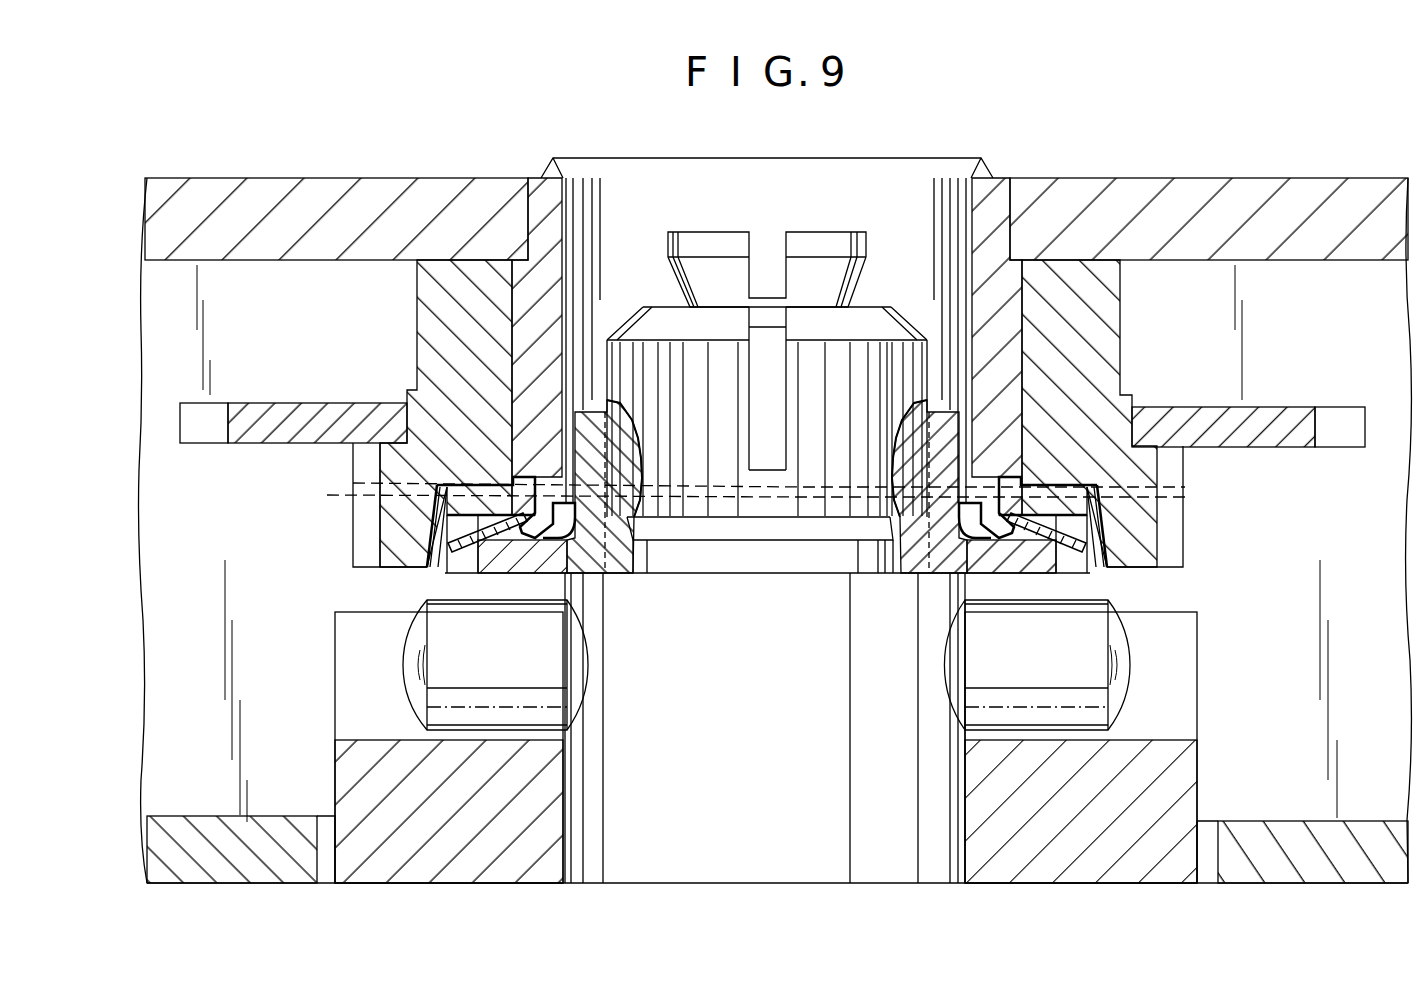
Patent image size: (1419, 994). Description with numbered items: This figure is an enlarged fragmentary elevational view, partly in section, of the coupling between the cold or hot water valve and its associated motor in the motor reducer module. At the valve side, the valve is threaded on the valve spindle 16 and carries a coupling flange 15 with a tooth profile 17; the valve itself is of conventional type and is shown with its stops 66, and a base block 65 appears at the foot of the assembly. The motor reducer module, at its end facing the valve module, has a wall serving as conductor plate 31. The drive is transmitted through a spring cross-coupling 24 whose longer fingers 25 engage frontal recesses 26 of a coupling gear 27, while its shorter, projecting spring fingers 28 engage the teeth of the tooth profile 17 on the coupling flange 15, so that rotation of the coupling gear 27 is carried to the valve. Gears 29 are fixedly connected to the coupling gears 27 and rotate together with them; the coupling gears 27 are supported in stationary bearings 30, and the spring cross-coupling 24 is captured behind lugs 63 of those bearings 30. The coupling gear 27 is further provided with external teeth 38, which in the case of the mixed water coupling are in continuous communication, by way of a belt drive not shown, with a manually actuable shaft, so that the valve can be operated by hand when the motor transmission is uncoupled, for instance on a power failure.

The stationary bearings 30 is at (532, 177).
The valve spindles 16 is at (887, 360).
The coupling gears 27 is at (1107, 327).
The gears 29 is at (1278, 417).
The longer fingers 25 is at (383, 495).
The frontal recesses 26 is at (1150, 498).
The external teeth 38 is at (368, 523).
The spring cross-coupling 24 is at (442, 539).
The shorter spring fingers 28 is at (433, 570).
The lugs 63 is at (540, 523).
The coupling flanges 15 is at (1082, 539).
The tooth profiles 17 is at (1042, 573).
The stops 66 is at (1077, 653).
The base block 65 is at (1180, 777).
The conductor plate 31 is at (253, 830).